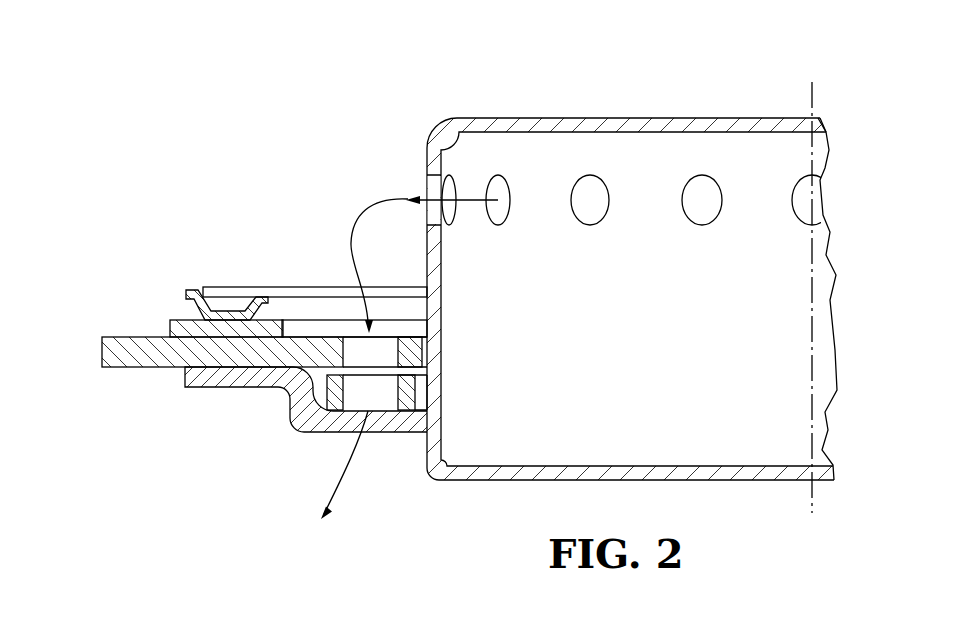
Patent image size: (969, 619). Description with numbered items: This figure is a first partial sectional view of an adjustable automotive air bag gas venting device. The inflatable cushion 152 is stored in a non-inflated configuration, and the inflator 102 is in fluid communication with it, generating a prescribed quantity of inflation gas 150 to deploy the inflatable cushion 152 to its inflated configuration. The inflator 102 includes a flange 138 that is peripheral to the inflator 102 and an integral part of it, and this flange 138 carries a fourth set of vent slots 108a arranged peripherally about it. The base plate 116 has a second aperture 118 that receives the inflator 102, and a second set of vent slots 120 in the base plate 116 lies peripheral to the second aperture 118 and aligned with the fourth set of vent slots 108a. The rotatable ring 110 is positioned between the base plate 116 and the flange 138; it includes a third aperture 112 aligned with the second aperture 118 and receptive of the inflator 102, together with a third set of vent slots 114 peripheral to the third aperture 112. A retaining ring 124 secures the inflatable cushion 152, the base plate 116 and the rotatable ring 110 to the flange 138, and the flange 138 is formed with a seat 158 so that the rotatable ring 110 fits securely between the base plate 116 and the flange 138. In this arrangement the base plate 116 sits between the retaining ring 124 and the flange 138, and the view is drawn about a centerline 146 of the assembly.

The inflator 102 is at (817, 117).
The centerline 146 is at (810, 98).
The third aperture 112 is at (632, 273).
The second aperture 118 is at (637, 200).
The retaining ring 124 is at (198, 287).
The inflatable cushion 152 is at (180, 326).
The base plate 116 is at (160, 337).
The second set of vent slots 120 is at (357, 352).
The seat 158 is at (420, 390).
The rotatable ring 110 is at (327, 388).
The third set of vent slots 114 is at (388, 398).
The fourth set of vent slots 108a is at (352, 427).
The flange 138 is at (212, 385).
The inflation gas 150 is at (362, 208).